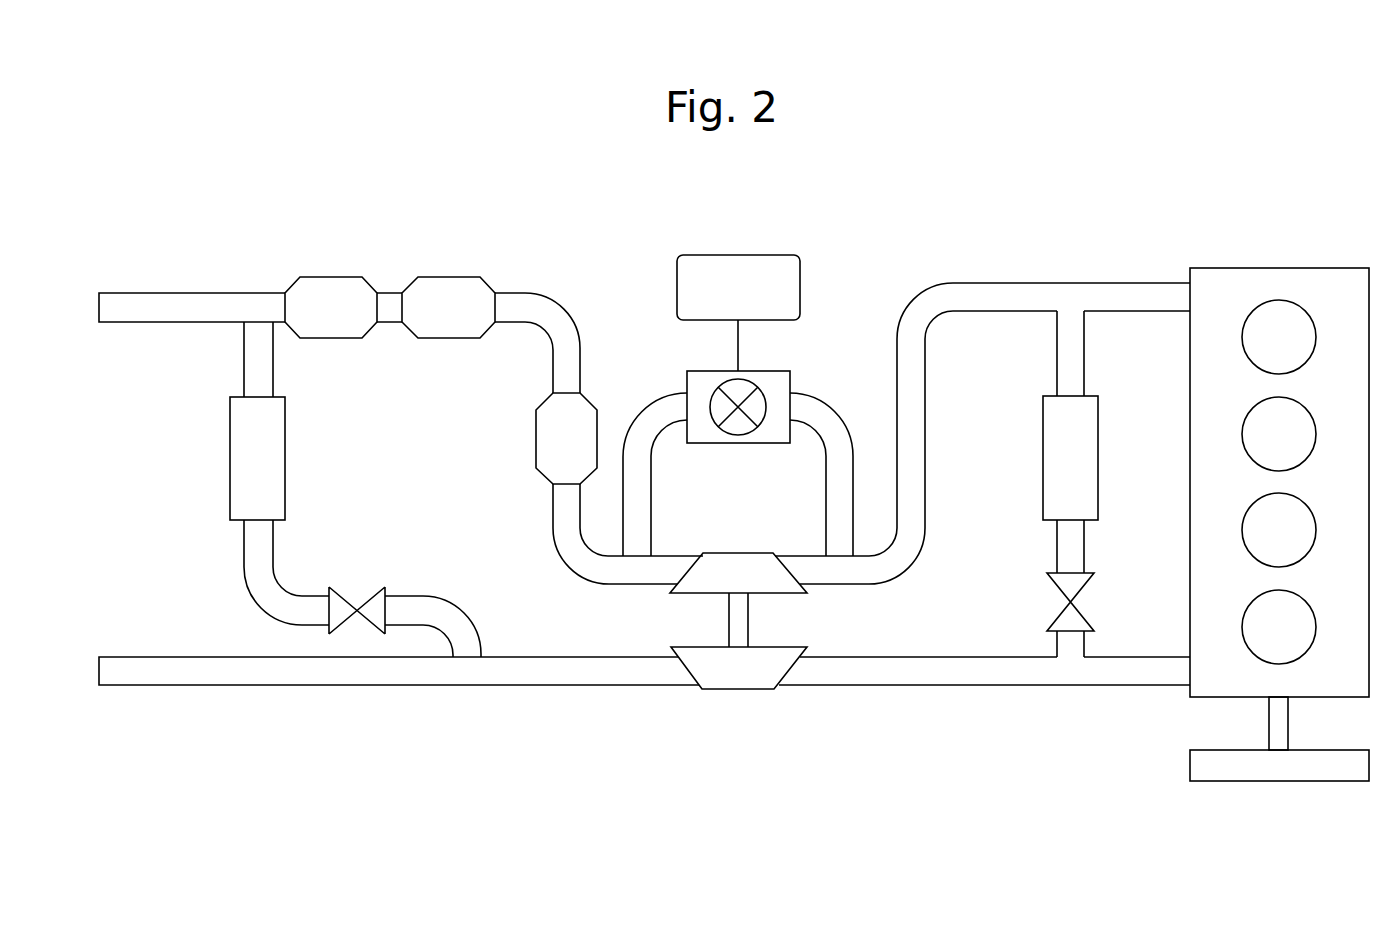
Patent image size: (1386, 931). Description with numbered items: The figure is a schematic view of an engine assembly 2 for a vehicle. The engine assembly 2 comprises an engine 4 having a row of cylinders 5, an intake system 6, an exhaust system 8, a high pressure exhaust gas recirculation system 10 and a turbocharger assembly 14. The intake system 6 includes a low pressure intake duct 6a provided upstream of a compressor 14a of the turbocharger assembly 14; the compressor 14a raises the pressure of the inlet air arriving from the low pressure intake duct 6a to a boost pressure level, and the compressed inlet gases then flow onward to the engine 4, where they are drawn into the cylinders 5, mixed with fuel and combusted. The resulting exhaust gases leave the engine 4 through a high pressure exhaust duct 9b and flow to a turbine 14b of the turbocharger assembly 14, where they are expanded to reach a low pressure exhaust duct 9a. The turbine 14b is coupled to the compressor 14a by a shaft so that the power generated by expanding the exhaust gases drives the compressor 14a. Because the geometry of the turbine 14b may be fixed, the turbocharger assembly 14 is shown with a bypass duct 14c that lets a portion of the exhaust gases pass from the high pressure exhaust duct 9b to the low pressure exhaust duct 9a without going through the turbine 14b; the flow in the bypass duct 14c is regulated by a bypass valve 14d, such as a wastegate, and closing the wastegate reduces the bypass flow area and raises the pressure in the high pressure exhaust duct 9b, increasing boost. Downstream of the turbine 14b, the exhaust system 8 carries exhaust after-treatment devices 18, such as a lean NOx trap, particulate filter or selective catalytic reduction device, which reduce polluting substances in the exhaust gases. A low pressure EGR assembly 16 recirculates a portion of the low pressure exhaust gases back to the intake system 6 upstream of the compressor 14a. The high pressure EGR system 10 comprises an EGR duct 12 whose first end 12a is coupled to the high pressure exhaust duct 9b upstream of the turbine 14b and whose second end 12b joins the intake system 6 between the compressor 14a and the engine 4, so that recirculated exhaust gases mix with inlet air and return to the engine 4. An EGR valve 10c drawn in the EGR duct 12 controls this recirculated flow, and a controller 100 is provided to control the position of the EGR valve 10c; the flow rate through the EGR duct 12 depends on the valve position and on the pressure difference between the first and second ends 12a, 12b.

The engine assembly 2 is at (1210, 186).
The engine 4 is at (1279, 494).
The cylinders 5 is at (1287, 640).
The intake system 6 is at (549, 697).
The low pressure intake duct 6a is at (278, 679).
The exhaust system 8 is at (855, 295).
The low pressure exhaust duct 9a is at (527, 297).
The high pressure exhaust duct 9b is at (985, 292).
The high pressure exhaust gas recirculation system 10 is at (993, 341).
The EGR valve 10c is at (1065, 615).
The HP EGR duct 12 is at (1072, 364).
The first end of HP EGR duct 12a is at (1072, 310).
The second end of HP EGR duct 12b is at (1071, 659).
The turbocharger assembly 14 is at (781, 623).
The compressor 14a is at (735, 682).
The turbine 14b is at (755, 565).
The bypass duct 14c is at (826, 410).
The bypass valve 14d is at (697, 377).
The low pressure EGR assembly 16 is at (226, 557).
The exhaust after-treatment device 18 is at (390, 268).
The controller 100 is at (732, 265).